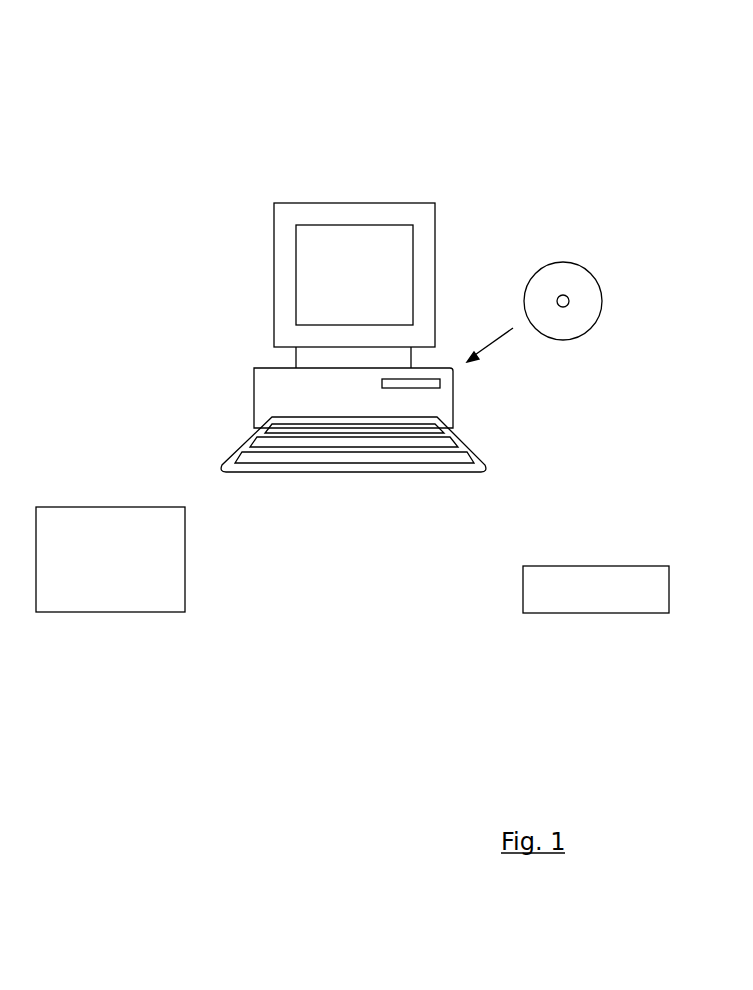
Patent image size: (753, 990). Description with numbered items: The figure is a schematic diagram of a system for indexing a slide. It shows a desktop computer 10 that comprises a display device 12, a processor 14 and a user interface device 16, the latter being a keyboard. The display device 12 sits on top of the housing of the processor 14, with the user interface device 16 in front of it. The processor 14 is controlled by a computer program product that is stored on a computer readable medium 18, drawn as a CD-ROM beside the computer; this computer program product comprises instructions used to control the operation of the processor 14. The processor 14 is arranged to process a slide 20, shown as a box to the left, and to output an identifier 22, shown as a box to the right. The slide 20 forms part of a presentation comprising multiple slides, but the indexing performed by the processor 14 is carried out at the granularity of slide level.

The desktop computer 10 is at (182, 92).
The display device 12 is at (435, 222).
The processor 14 is at (254, 384).
The user interface device 16 is at (343, 475).
The computer readable medium 18 is at (602, 297).
The slide 20 is at (103, 612).
The identifier 22 is at (590, 613).